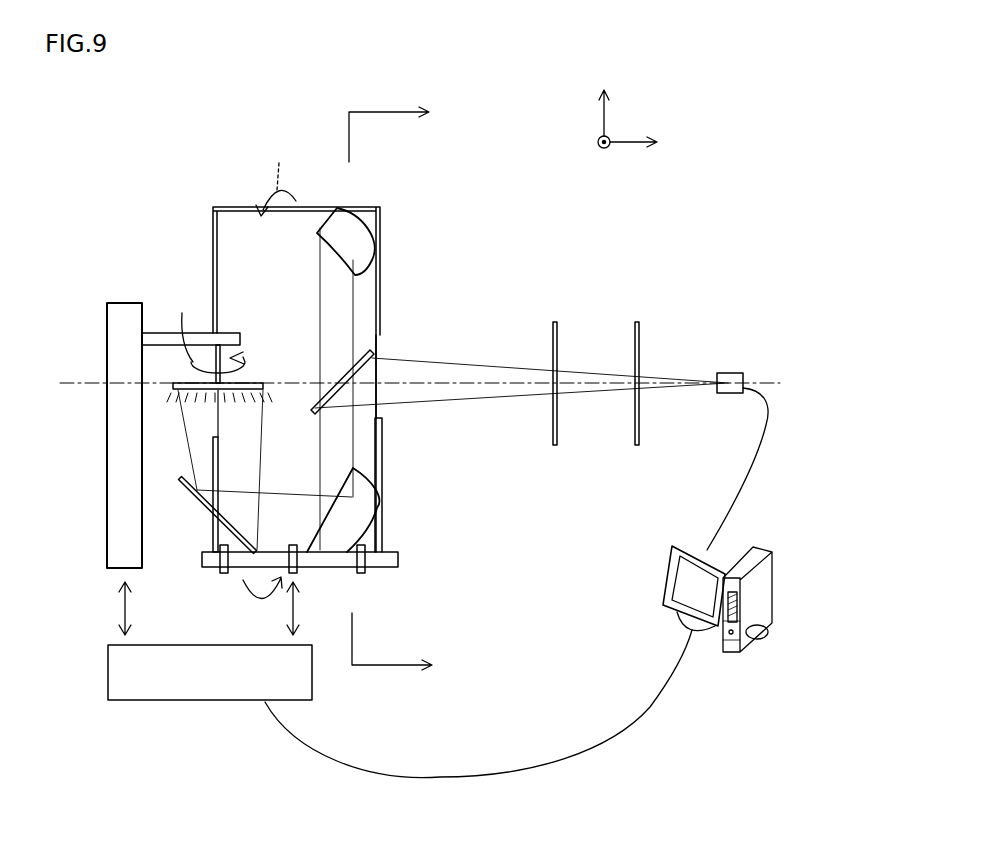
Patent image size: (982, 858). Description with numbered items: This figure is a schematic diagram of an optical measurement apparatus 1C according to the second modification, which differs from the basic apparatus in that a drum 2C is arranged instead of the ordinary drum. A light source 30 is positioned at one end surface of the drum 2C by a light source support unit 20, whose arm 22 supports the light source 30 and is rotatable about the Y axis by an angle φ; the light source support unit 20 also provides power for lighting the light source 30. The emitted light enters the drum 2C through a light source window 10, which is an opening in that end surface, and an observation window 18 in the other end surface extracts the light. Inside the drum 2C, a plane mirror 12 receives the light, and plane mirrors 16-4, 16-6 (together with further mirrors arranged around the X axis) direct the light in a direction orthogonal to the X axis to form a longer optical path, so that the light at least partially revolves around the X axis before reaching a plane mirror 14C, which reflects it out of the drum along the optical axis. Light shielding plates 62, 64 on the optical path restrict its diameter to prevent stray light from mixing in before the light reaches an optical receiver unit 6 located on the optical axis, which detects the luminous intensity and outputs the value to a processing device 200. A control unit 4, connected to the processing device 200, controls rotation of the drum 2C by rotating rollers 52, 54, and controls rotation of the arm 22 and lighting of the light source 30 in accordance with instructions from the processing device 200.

The optical measurement apparatus 1C is at (767, 207).
The drum 2C is at (230, 217).
The control unit 4 is at (143, 702).
The optical receiver unit 6 is at (731, 370).
The light source window 10 is at (238, 327).
The plane mirror 12 is at (205, 510).
The plane mirror 14C is at (368, 350).
The plane mirror 16-4 is at (353, 525).
The plane mirror 16-6 is at (356, 232).
The observation window 18 is at (403, 348).
The light source support unit 20 is at (124, 312).
The arm 22 is at (228, 349).
The light source 30 is at (192, 381).
The roller 52 is at (332, 572).
The roller 54 is at (380, 563).
The light shielding plate 62 is at (558, 333).
The light shielding plate 64 is at (641, 333).
The processing device 200 is at (773, 604).